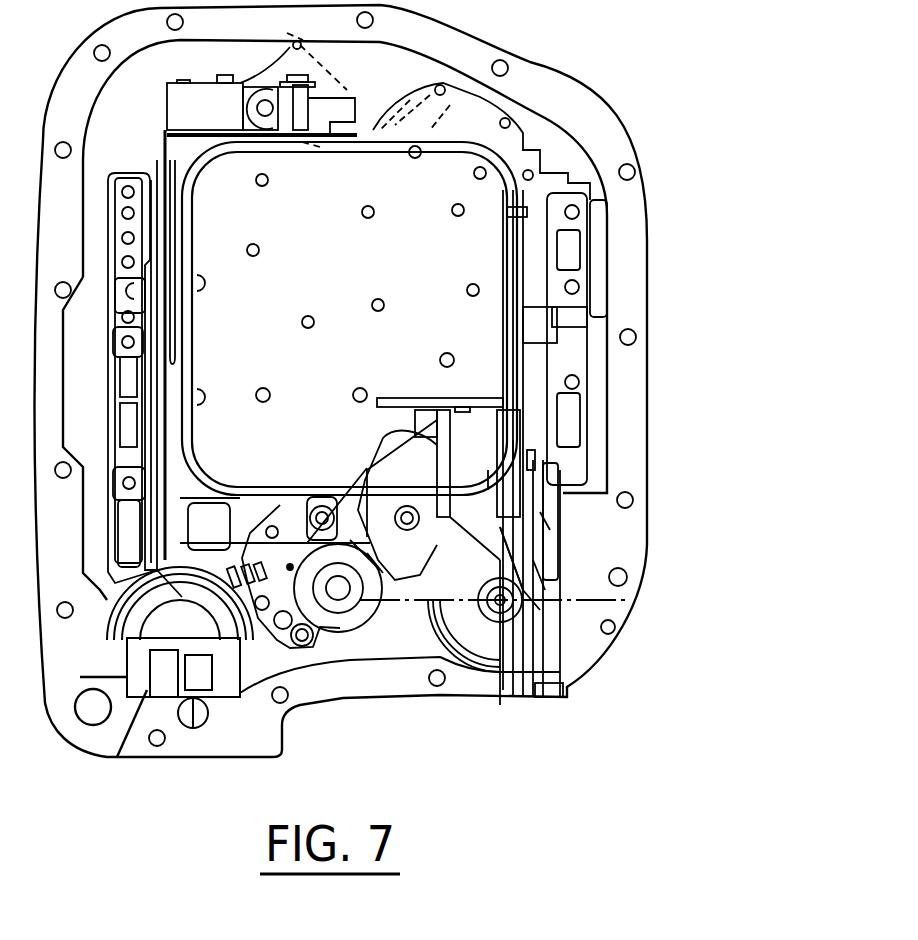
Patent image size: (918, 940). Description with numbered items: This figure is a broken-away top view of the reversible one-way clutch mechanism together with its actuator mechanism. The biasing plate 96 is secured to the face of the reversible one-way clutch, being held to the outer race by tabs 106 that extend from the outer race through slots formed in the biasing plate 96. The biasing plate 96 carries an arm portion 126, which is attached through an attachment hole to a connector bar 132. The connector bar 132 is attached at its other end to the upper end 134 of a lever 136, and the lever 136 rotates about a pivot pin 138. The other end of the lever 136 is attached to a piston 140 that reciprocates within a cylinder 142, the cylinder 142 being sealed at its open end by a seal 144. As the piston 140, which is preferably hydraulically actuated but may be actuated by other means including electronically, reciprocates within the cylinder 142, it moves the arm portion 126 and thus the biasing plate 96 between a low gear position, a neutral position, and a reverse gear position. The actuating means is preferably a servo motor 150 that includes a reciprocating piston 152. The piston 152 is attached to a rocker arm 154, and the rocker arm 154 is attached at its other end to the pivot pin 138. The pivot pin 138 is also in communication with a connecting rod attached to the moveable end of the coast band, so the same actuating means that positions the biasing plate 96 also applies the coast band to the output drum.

The biasing plate 96 is at (508, 298).
The tabs 106 is at (505, 240).
The arm portion 126 is at (505, 378).
The connector bar 132 is at (440, 492).
The upper end 134 is at (513, 448).
The lever 136 is at (488, 480).
The pivot pin 138 is at (530, 458).
The piston 140 is at (530, 495).
The rocker arm 154 is at (545, 522).
The cylinder 142 is at (523, 542).
The seal 144 is at (540, 575).
The reciprocating piston 152 is at (500, 600).
The servo motor 150 is at (497, 607).